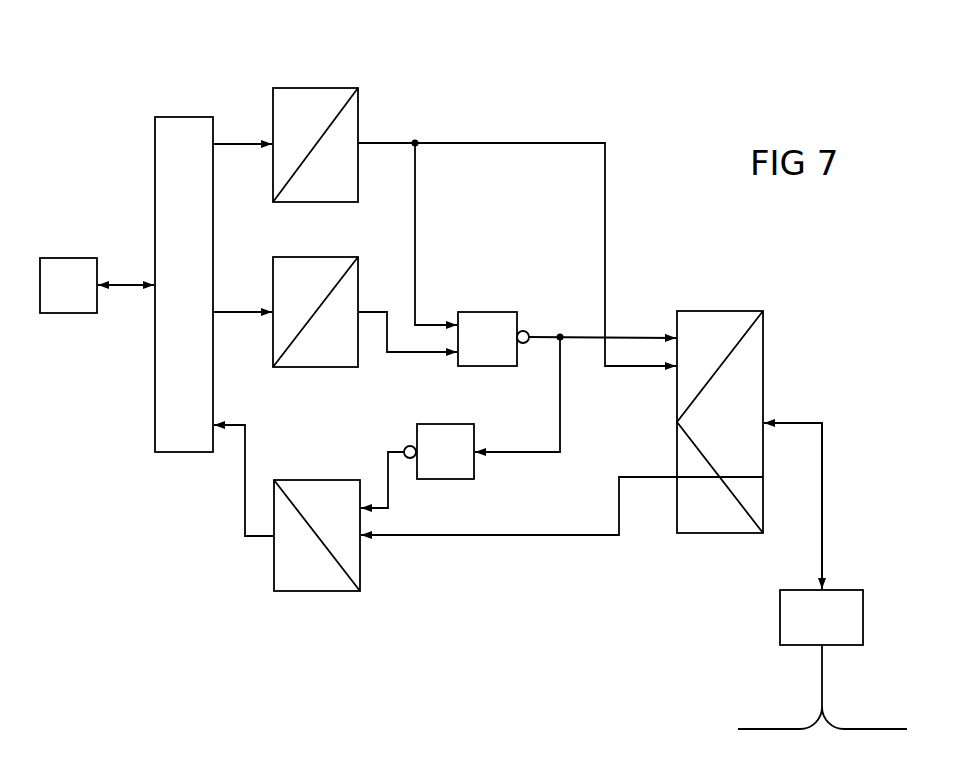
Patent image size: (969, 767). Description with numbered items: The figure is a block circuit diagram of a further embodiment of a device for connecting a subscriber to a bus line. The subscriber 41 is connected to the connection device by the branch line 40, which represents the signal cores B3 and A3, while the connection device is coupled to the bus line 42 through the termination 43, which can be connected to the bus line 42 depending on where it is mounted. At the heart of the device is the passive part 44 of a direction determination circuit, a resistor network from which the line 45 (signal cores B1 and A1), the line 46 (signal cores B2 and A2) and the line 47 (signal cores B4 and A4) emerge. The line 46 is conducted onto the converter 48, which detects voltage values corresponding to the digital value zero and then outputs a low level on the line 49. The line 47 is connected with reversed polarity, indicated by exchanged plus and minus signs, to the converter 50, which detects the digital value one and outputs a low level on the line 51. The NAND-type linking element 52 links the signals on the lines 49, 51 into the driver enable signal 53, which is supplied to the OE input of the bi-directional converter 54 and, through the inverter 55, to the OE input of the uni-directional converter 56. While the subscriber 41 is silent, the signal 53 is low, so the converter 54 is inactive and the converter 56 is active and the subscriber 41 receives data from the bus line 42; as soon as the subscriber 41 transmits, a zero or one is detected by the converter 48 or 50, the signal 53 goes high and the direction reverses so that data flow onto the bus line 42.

The branch line 40 is at (125, 288).
The subscriber 41 is at (83, 273).
The bus line 42 is at (760, 728).
The termination 43 is at (793, 603).
The passive part 44 is at (199, 130).
The line 45 is at (242, 465).
The line 46 is at (231, 140).
The line 47 is at (230, 302).
The RS 485/TTL converter 48 is at (330, 103).
The line 49 is at (502, 142).
The RS 485/TTL converter 50 is at (302, 355).
The line 51 is at (430, 355).
The linking element 52 is at (503, 324).
The signal 53 is at (560, 407).
The bi-directional TTL/RS 485 converter 54 is at (720, 322).
The inverter 55 is at (460, 463).
The uni-directional TTL/RS 485 converter 56 is at (347, 578).